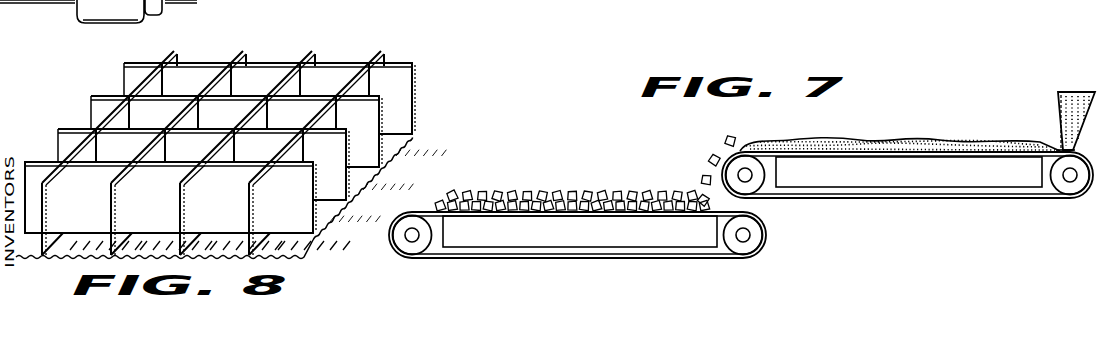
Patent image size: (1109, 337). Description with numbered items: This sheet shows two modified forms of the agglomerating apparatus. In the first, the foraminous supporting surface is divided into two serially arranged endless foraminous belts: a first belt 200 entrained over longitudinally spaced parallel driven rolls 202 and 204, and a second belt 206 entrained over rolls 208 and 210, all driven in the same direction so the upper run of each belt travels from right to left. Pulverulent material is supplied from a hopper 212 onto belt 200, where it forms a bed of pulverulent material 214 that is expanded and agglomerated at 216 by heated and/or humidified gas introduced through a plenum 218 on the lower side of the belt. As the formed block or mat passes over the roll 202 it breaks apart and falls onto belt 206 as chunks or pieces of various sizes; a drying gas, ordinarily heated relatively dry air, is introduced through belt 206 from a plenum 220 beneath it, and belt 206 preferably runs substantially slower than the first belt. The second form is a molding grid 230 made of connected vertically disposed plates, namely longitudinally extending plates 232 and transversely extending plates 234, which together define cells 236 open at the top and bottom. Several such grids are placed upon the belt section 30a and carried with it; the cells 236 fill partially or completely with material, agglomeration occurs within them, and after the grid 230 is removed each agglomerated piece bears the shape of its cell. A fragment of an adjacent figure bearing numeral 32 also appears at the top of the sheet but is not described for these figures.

In FIG. 8, the container 32 is at (106, 6).
In FIG. 8, the molding grid 230 is at (418, 63).
In FIG. 8, the longitudinally extending plates 232 is at (303, 133).
In FIG. 8, the transversely extending plates 234 is at (274, 85).
In FIG. 8, the cells 236 is at (113, 143).
In FIG. 8, the belt section 30a is at (273, 252).
In FIG. 7, the first belt 200 is at (833, 150).
In FIG. 7, the driven roll 202 is at (760, 183).
In FIG. 7, the driven roll 204 is at (1073, 183).
In FIG. 7, the second belt 206 is at (545, 198).
In FIG. 7, the roll 208 is at (418, 248).
In FIG. 7, the roll 210 is at (742, 248).
In FIG. 7, the hopper 212 is at (1056, 102).
In FIG. 7, the bed of pulverulent material 214 is at (1047, 144).
In FIG. 7, the expanded and agglomerated material 216 is at (905, 148).
In FIG. 7, the plenum 218 is at (920, 177).
In FIG. 7, the plenum 220 is at (682, 235).